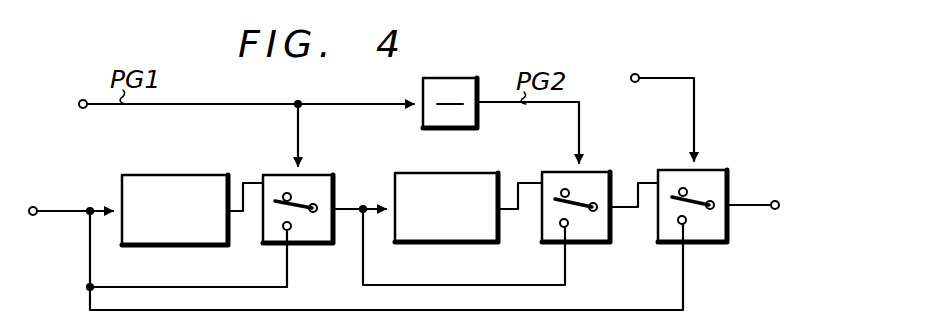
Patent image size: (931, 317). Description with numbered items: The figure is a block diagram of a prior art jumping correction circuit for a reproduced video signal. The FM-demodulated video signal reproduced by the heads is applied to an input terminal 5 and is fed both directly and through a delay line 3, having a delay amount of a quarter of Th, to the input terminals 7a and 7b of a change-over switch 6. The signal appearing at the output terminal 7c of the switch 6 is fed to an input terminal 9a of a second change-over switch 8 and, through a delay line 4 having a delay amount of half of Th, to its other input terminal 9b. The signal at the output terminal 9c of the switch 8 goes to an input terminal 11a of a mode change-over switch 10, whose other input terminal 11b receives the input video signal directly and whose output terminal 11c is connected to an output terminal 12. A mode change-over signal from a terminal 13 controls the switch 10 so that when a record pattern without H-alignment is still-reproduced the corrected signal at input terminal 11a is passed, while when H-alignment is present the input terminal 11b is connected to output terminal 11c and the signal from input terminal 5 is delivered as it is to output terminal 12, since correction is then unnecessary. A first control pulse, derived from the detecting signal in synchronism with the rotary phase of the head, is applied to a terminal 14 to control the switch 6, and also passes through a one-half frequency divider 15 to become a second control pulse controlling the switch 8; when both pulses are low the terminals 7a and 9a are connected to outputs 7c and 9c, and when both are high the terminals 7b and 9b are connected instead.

The delay line 3 is at (172, 246).
The delay line 4 is at (432, 245).
The input terminal 5 is at (32, 209).
The change-over switch 6 is at (301, 213).
The input terminal 7a is at (282, 234).
The input terminal 7b is at (283, 190).
The output terminal 7c is at (317, 202).
The change-over switch 8 is at (568, 213).
The input terminal 9a is at (560, 230).
The input terminal 9b is at (567, 189).
The output terminal 9c is at (592, 202).
The mode change-over switch 10 is at (705, 224).
The input terminal 11a is at (686, 188).
The input terminal 11b is at (680, 224).
The output terminal 11c is at (713, 201).
The output terminal 12 is at (786, 185).
The terminal 13 is at (641, 73).
The terminal 14 is at (79, 109).
The ½ frequency divider 15 is at (478, 112).